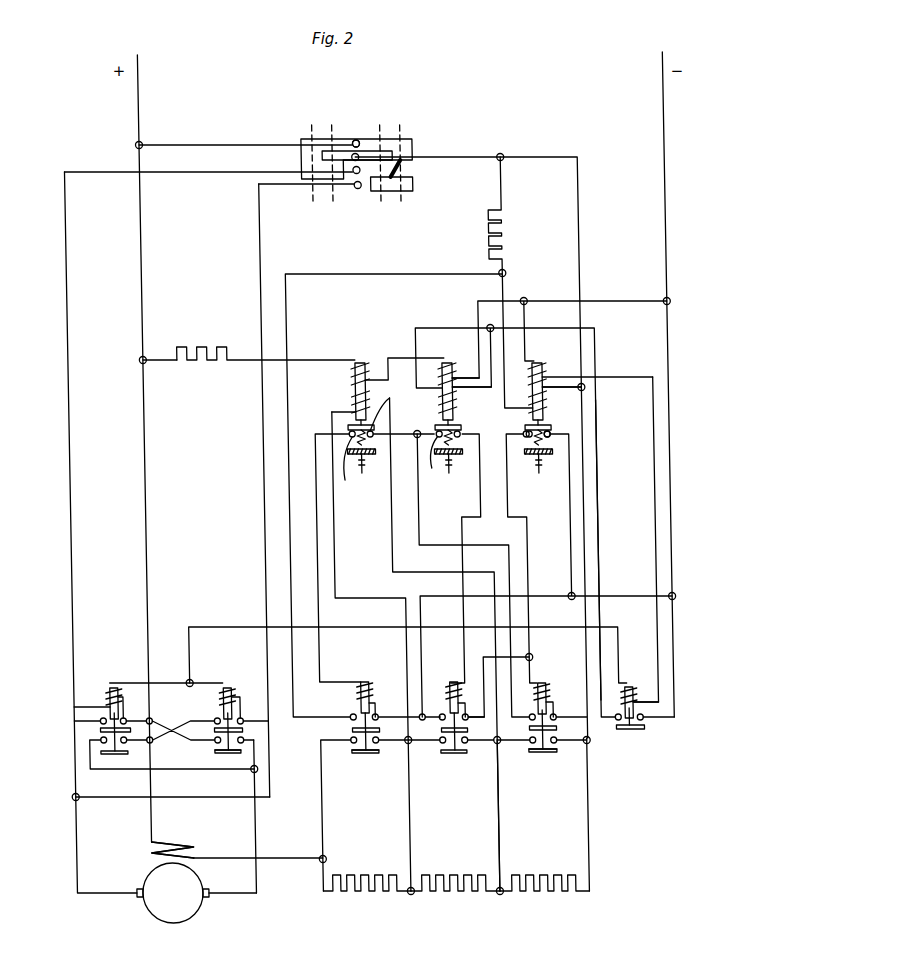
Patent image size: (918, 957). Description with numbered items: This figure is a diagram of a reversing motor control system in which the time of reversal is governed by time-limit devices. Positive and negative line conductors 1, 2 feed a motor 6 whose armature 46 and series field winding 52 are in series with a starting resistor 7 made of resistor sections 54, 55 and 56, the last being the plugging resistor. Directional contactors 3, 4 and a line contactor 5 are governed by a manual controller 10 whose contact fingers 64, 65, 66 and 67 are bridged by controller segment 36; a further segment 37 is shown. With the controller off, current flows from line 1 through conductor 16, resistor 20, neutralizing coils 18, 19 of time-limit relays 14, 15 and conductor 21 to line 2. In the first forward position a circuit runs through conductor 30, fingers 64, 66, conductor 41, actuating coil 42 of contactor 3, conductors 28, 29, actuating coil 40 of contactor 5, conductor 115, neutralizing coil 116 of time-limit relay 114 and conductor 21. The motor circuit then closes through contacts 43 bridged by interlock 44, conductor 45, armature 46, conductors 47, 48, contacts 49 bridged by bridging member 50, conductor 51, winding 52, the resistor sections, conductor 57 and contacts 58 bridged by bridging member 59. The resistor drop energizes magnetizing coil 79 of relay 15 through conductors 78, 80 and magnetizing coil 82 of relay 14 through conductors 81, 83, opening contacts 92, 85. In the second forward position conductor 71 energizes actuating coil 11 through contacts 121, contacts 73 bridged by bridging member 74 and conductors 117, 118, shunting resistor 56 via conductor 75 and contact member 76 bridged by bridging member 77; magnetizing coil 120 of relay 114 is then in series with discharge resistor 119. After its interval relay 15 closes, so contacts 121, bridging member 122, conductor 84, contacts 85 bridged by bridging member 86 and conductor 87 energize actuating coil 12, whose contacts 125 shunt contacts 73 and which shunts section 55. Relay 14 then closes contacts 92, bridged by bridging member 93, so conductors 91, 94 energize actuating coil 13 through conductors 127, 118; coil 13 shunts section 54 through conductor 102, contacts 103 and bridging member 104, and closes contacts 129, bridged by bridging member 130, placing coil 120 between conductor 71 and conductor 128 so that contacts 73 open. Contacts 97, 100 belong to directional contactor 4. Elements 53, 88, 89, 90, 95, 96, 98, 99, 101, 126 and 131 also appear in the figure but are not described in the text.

The positive line conductor 1 is at (139, 145).
The negative line conductor 2 is at (664, 136).
The directional contactor 3 is at (108, 679).
The directional contactor 4 is at (222, 679).
The line contactor 5 is at (630, 675).
The motor 6 is at (204, 841).
The starting resistor 7 is at (458, 844).
The manual controller 10 is at (364, 91).
The actuating coil 11 is at (536, 685).
The actuating coil 12 is at (446, 684).
The actuating coil 13 is at (356, 684).
The time-limit relay 14 is at (364, 352).
The time-limit relay 15 is at (452, 352).
The conductor 16 is at (156, 362).
The neutralizing coil 18 is at (351, 378).
The neutralizing coil 19 is at (438, 376).
The resistor 20 is at (188, 346).
The conductor 21 is at (628, 301).
The conductor 28 is at (180, 690).
The conductor 29 is at (236, 618).
The conductor 30 is at (249, 145).
The controller segment 36 is at (414, 141).
The controller contact segment 37 is at (413, 188).
The actuating coil 40 is at (610, 712).
The conductor 41 is at (66, 320).
The actuating coil 42 is at (100, 695).
The contacts 43 is at (135, 712).
The interlock 44 is at (134, 735).
The conductor 45 is at (66, 821).
The armature 46 is at (172, 893).
The conductor 47 is at (245, 887).
The conductor 48 is at (164, 773).
The contacts 49 is at (90, 738).
The bridging member 50 is at (210, 766).
The conductor 51 is at (140, 820).
The series field winding 52 is at (140, 850).
The conductor 53 is at (276, 855).
The resistor section 54 is at (342, 893).
The resistor section 55 is at (434, 893).
The plugging resistor section 56 is at (521, 893).
The conductor 57 is at (578, 772).
The contacts 58 is at (608, 730).
The bridging member 59 is at (635, 730).
The contact finger 64 is at (366, 144).
The contact finger 65 is at (344, 158).
The contact finger 66 is at (221, 173).
The contact finger 67 is at (359, 189).
The conductor 71 is at (548, 156).
The contacts 73 is at (546, 430).
The bridging member 74 is at (520, 430).
The conductor 75 is at (489, 755).
The contact member 76 is at (547, 733).
The bridging member 77 is at (543, 753).
The conductor 78 is at (390, 573).
The magnetizing coil 79 is at (450, 399).
The conductor 80 is at (593, 506).
The conductor 81 is at (329, 560).
The magnetizing coil 82 is at (351, 406).
The conductor 83 is at (417, 328).
The conductor 84 is at (562, 548).
The contact members 85 is at (440, 456).
The bridging member 86 is at (457, 428).
The conductor 87 is at (474, 510).
The conductor 88 is at (402, 747).
The contact 89 is at (456, 731).
The contact 90 is at (444, 754).
The conductor 91 is at (400, 436).
The contact members 92 is at (353, 467).
The bridging member 93 is at (391, 410).
The conductor 94 is at (310, 518).
The conductor 95 is at (259, 247).
The contactor coil 96 is at (223, 692).
The contacts 97 is at (208, 731).
The contact bridge 98 is at (206, 754).
The conductor 99 is at (216, 799).
The contacts 100 is at (232, 718).
The contact 101 is at (259, 735).
The conductor 102 is at (311, 774).
The contact members 103 is at (341, 735).
The bridging member 104 is at (350, 754).
The time-limit relay 114 is at (548, 352).
The conductor 115 is at (649, 548).
The neutralizing coil 116 is at (541, 374).
The conductor 117 is at (563, 513).
The conductor 118 is at (598, 598).
The discharge resistor 119 is at (502, 247).
The magnetizing coil 120 is at (539, 398).
The contact members 121 is at (544, 713).
The bridging member 122 is at (521, 729).
The contact members 125 is at (479, 709).
The contact 126 is at (429, 731).
The conductor 127 is at (366, 716).
The conductor 128 is at (284, 323).
The contact members 129 is at (342, 715).
The bridging member 130 is at (369, 730).
The conductor 131 is at (494, 653).